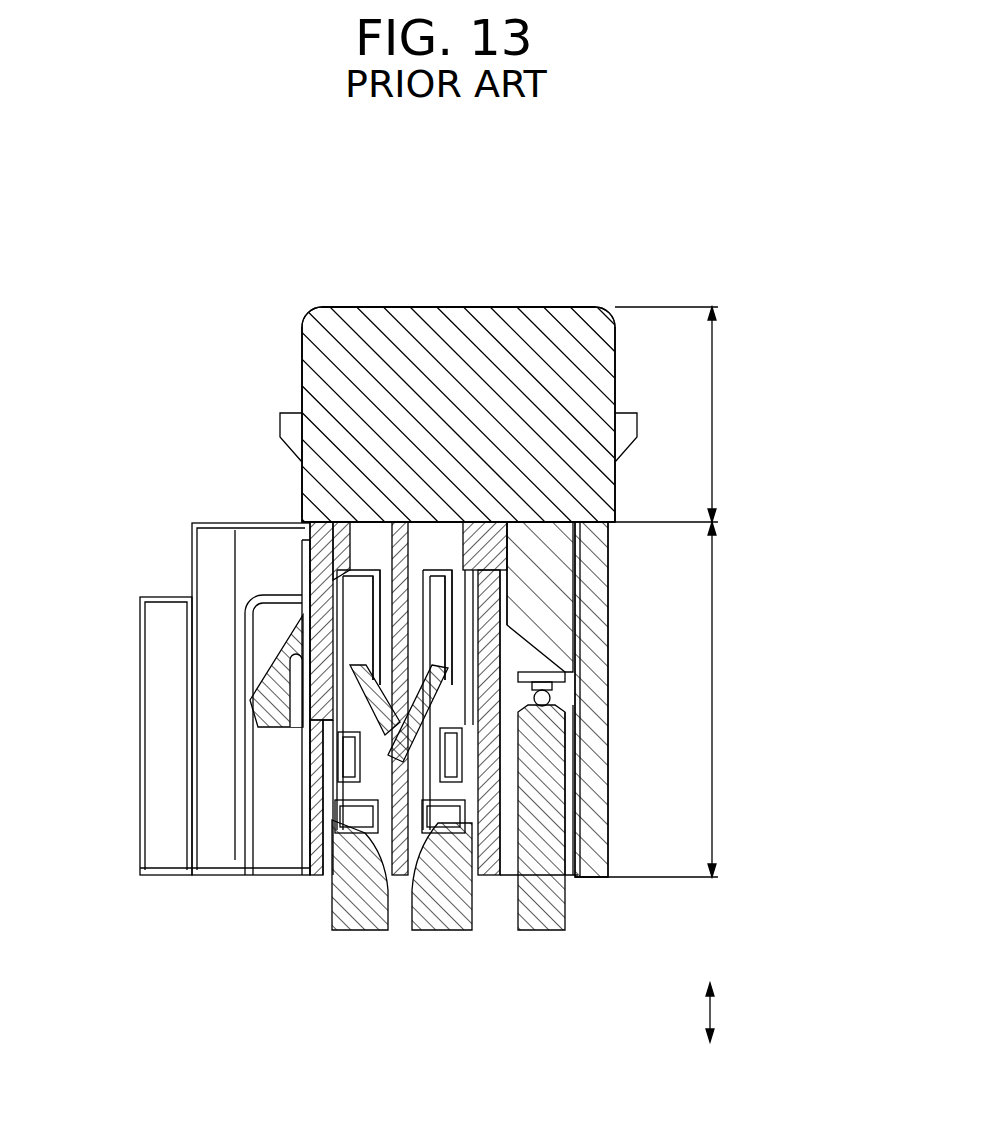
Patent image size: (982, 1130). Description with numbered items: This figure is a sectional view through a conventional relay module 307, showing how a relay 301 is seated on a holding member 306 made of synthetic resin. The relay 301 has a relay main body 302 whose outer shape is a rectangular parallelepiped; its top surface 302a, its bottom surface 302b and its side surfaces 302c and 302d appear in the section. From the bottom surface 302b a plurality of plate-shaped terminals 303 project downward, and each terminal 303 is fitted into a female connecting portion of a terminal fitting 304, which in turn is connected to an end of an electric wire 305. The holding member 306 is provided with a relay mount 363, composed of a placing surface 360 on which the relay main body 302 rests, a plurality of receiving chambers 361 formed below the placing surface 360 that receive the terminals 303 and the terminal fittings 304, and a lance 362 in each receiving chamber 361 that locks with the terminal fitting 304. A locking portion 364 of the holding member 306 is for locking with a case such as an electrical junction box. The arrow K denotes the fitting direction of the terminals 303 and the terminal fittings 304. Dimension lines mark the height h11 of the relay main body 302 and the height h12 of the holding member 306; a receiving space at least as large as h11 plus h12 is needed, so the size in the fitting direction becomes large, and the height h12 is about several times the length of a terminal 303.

The relay 301 is at (555, 293).
The relay main body 302 is at (455, 307).
The top surface of the relay main body 302a is at (407, 307).
The bottom surface of housing body 302b is at (302, 505).
The side surface of the relay main body 302c is at (302, 360).
The side surface of the relay main body 302d is at (617, 352).
The terminal 303 is at (395, 560).
The terminal fitting 304 is at (445, 645).
The electric wire 305 is at (594, 883).
The holding member 306 is at (228, 877).
The relay module 307 is at (762, 203).
The placing surface 360 is at (553, 570).
The receiving chamber 361 is at (573, 822).
The lance 362 is at (360, 723).
The relay mount 363 is at (607, 735).
The locking portion 364 is at (250, 722).
The height of the relay main body h11 is at (689, 414).
The height of the holding member h12 is at (667, 699).
The fitting direction K is at (714, 1012).